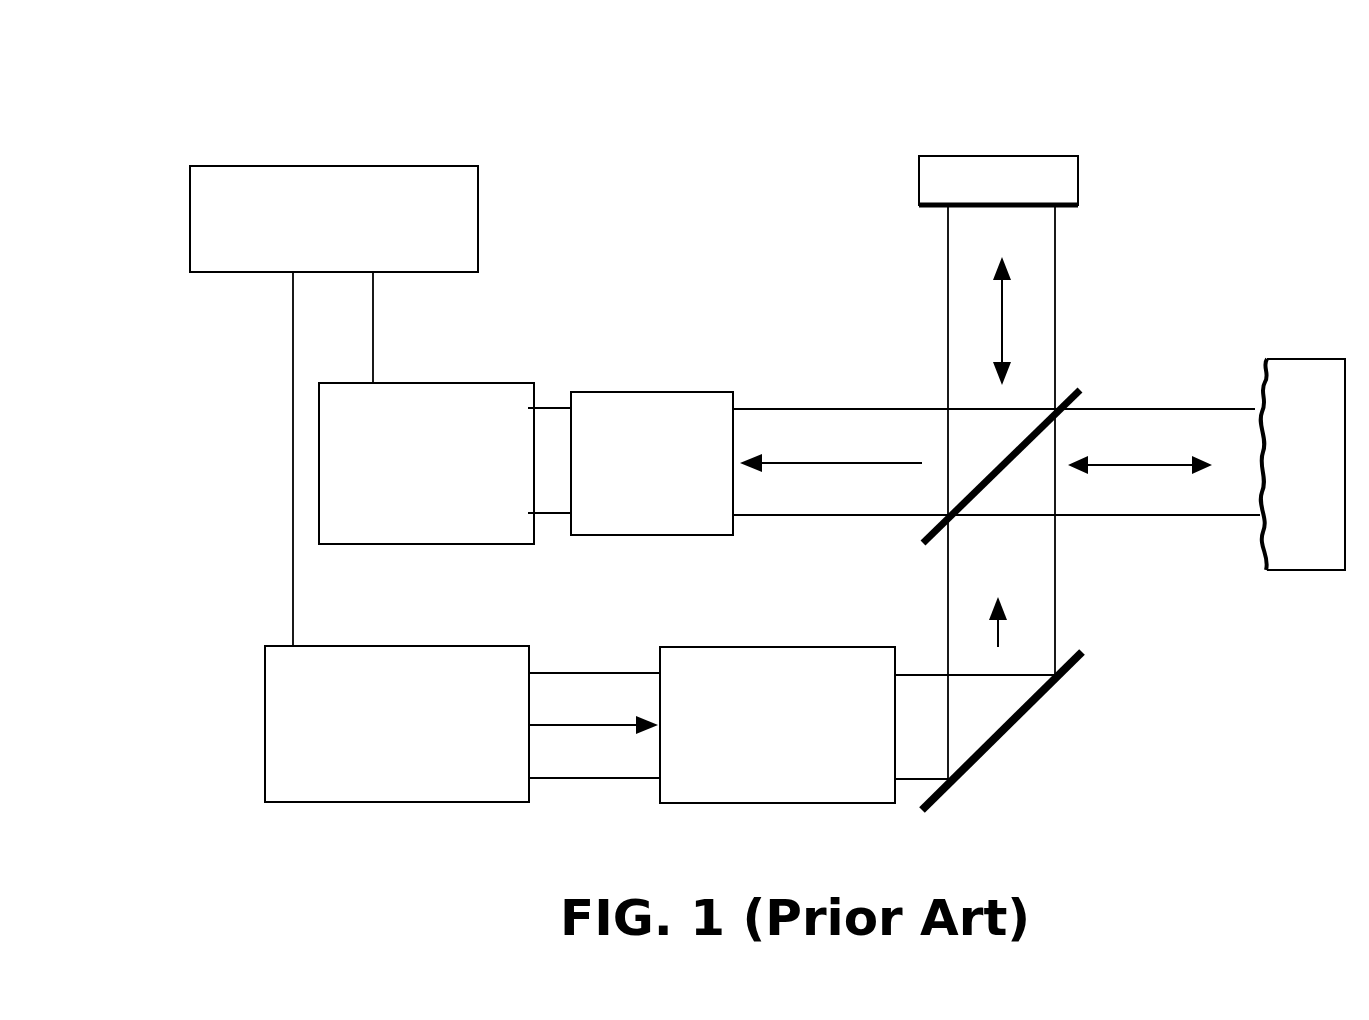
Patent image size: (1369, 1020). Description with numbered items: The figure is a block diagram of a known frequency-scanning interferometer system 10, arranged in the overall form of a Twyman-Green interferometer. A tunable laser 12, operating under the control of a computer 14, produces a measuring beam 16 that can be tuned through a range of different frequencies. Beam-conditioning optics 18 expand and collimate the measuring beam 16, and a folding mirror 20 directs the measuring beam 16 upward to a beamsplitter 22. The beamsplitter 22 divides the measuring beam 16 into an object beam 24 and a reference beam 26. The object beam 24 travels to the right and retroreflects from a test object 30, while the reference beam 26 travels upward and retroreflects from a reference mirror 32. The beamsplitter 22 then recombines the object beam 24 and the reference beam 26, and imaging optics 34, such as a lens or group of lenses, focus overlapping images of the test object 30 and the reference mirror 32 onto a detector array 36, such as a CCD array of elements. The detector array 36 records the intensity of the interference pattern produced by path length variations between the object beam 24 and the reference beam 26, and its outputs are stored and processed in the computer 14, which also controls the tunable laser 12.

The frequency-scanning interferometer system 10 is at (426, 100).
The tunable laser 12 is at (374, 739).
The computer 14 is at (319, 239).
The measuring beam 16 is at (571, 725).
The beam-conditioning optics 18 is at (747, 744).
The folding mirror 20 is at (988, 742).
The beamsplitter 22 is at (1068, 390).
The object beam 24 is at (857, 461).
The reference beam 26 is at (1000, 333).
The test object 30 is at (1258, 396).
The reference mirror 32 is at (1040, 207).
The imaging optics 34 is at (632, 477).
The detector array 36 is at (408, 487).